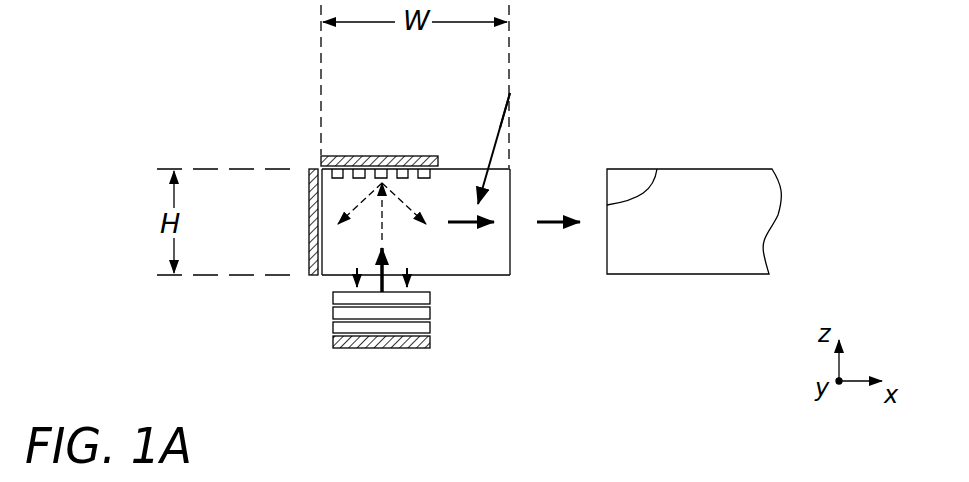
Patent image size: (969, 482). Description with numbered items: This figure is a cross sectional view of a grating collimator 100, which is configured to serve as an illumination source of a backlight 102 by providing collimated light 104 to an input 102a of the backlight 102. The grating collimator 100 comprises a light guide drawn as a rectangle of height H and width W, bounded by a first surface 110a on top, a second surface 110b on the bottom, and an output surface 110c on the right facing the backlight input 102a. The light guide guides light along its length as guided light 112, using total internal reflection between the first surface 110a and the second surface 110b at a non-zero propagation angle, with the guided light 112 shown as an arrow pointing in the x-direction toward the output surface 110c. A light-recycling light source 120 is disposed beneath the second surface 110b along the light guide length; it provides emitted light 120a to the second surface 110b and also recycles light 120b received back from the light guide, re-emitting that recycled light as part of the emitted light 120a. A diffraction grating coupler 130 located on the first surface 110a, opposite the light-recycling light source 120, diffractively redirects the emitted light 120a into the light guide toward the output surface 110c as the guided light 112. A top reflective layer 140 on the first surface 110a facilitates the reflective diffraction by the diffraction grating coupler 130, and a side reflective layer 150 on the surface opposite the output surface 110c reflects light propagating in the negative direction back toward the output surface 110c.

The grating collimator 100 is at (259, 69).
The backlight 102 is at (713, 239).
The input of the backlight 102a is at (658, 169).
The collimated light 104 is at (566, 240).
The first surface of the light guide 110a is at (510, 169).
The second surface of the light guide 110b is at (498, 275).
The output surface of the light guide 110c is at (510, 203).
The guided light 112 is at (510, 93).
The light-recycling light source 120 is at (322, 293).
The emitted light 120a is at (396, 248).
The recycled light 120b is at (421, 280).
The diffraction grating coupler 130 is at (476, 148).
The top reflective layer 140 is at (362, 156).
The side reflective layer 150 is at (313, 168).